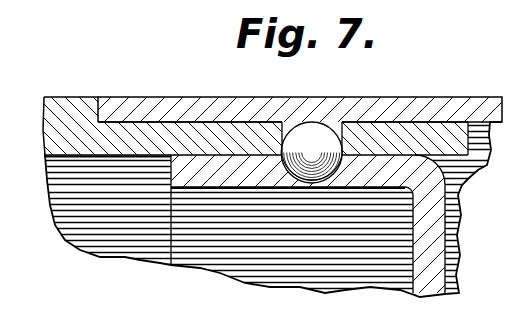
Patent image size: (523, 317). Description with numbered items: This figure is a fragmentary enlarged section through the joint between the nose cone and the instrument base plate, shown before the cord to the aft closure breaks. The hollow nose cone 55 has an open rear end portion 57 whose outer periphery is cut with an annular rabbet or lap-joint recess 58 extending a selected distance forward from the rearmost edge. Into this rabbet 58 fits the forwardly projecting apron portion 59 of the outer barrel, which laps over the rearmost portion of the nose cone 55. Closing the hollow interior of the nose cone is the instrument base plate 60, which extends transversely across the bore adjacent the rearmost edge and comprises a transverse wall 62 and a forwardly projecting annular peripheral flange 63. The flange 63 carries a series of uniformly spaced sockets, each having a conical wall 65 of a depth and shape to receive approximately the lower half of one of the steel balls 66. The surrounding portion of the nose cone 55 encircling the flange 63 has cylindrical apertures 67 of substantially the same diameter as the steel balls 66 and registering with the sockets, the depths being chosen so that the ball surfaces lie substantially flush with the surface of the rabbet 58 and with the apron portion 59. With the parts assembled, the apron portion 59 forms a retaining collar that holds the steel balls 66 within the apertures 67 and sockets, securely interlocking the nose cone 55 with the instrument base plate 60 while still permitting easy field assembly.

The hollow nose cone 55 is at (67, 110).
The forwardly projecting apron portion 59 is at (212, 102).
The open rear end portion 57 is at (135, 138).
The annular rabbet or lap-joint recess 58 is at (160, 118).
The instrument base plate 60 is at (171, 228).
The forwardly projecting annular peripheral flange 63 is at (226, 176).
The transverse wall 62 is at (423, 233).
The cylindrical apertures 67 is at (340, 128).
The steel balls 66 is at (316, 168).
The conical wall 65 is at (347, 180).